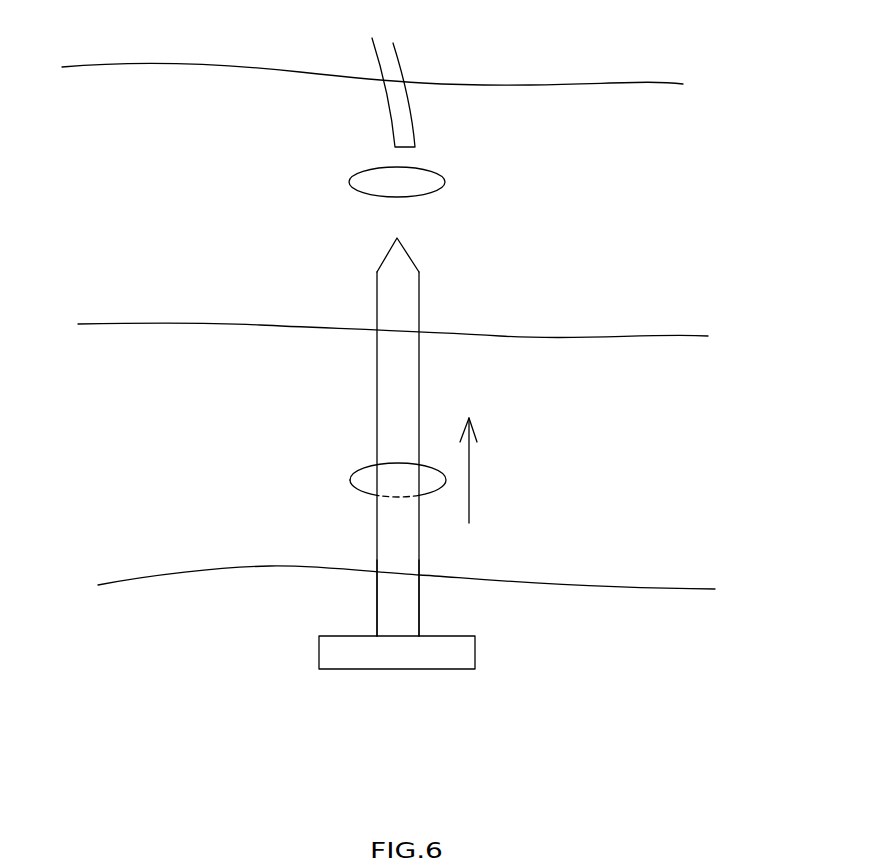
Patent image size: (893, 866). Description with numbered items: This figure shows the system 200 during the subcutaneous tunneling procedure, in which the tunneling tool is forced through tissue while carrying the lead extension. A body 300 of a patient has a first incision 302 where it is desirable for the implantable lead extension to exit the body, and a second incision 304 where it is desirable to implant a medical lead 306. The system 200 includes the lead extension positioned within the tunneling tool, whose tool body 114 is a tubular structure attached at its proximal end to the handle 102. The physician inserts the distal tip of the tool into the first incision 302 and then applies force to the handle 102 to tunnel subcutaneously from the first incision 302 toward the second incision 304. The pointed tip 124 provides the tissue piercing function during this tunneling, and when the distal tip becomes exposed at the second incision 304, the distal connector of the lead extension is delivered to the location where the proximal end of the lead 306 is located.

The body 300 is at (228, 444).
The medical lead 306 is at (403, 68).
The second incision 304 is at (447, 183).
The pointed tip 124 is at (408, 255).
The tool body 114 is at (377, 544).
The first incision 302 is at (355, 483).
The system 200 is at (430, 602).
The handle 102 is at (433, 670).